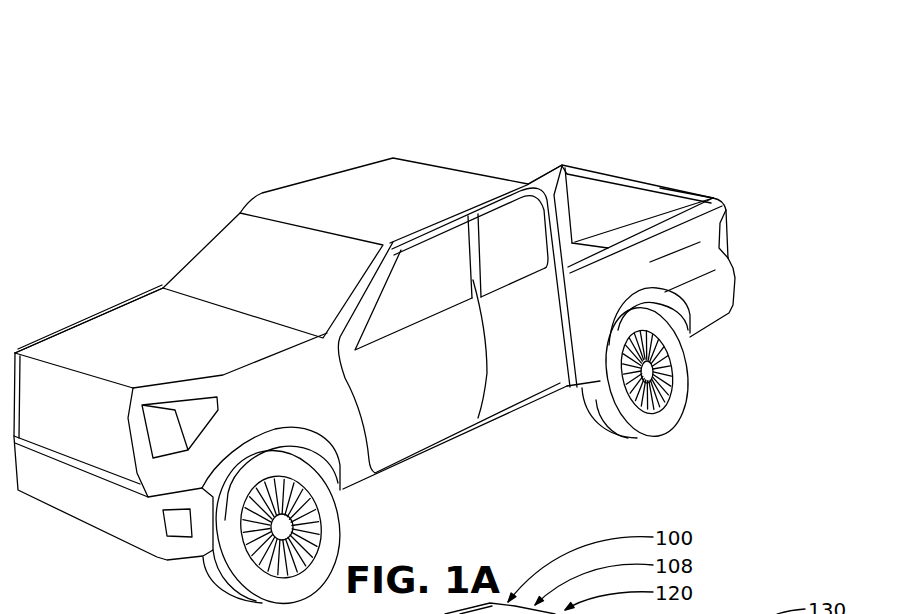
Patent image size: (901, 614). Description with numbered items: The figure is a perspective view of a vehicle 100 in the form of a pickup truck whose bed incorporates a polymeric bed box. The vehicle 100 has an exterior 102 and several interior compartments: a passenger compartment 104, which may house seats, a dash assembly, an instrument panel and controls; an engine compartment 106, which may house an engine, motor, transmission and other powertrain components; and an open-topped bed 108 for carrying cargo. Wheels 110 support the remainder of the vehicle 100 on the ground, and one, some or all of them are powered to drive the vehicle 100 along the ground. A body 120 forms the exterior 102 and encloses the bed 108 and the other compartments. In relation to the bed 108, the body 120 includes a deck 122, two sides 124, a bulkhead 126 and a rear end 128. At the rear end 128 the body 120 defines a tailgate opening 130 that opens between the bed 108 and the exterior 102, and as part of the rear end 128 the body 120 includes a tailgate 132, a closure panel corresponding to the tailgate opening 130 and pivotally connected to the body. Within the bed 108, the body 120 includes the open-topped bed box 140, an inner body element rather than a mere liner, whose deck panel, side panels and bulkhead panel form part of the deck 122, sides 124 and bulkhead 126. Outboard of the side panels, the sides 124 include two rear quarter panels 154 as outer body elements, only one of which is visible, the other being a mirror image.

The vehicle 100 is at (568, 165).
The exterior 102 is at (438, 392).
The passenger compartment 104 is at (193, 283).
The engine compartment 106 is at (148, 307).
The bed 108 is at (585, 167).
The wheels 110 is at (686, 344).
The body 120 is at (598, 170).
The deck 122 is at (672, 186).
The sides 124 is at (677, 257).
The bulkhead 126 is at (728, 213).
The rear end 128 is at (733, 300).
The tailgate opening 130 is at (572, 204).
The tailgate 132 is at (645, 184).
The bed box 140 is at (622, 195).
The rear quarter panels 154 is at (687, 285).